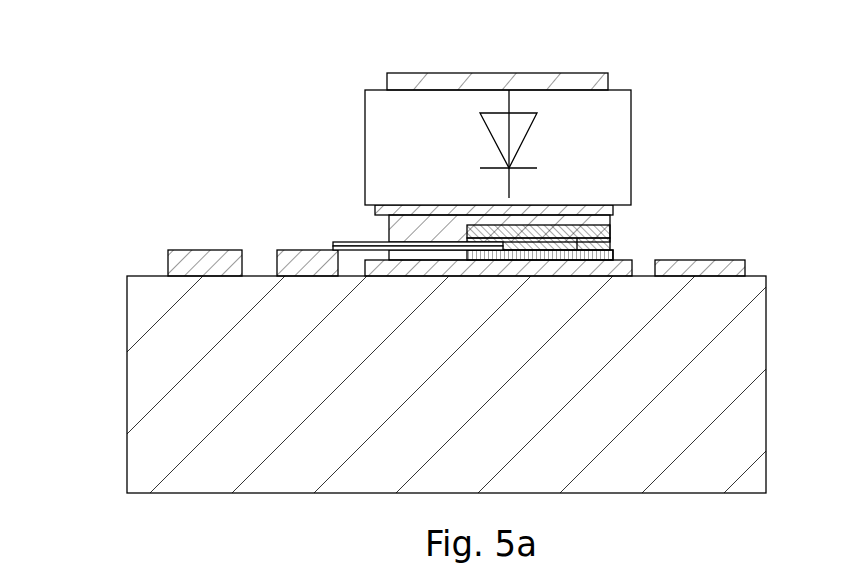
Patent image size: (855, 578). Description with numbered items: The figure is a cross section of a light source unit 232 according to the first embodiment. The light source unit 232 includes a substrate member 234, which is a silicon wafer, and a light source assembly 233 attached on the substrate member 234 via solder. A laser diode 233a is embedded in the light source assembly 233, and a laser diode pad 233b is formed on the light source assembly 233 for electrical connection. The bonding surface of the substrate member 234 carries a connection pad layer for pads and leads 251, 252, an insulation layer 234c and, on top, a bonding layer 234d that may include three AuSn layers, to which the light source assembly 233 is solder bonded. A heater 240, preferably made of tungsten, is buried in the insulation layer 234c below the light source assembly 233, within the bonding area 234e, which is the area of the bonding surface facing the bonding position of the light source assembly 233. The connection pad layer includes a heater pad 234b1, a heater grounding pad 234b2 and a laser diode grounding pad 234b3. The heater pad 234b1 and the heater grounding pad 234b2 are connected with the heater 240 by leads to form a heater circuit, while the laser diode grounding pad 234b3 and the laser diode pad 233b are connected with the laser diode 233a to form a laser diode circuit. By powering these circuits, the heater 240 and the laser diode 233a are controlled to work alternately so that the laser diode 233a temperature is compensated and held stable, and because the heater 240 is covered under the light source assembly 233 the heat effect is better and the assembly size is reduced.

The light source unit 232 is at (160, 115).
The light source assembly 233 is at (373, 148).
The laser diode 233a is at (518, 135).
The laser diode pad 233b is at (542, 80).
The substrate member 234 is at (135, 383).
The heater pad 234b1 is at (310, 260).
The heater grounding pad 234b2 is at (202, 267).
The laser diode grounding pad 234b3 is at (717, 268).
The insulation layer 234c is at (595, 230).
The bonding layer 234d is at (415, 227).
The bonding area 234e is at (503, 266).
The heater 240 is at (560, 247).
The lead 251 is at (367, 243).
The lead 252 is at (367, 243).